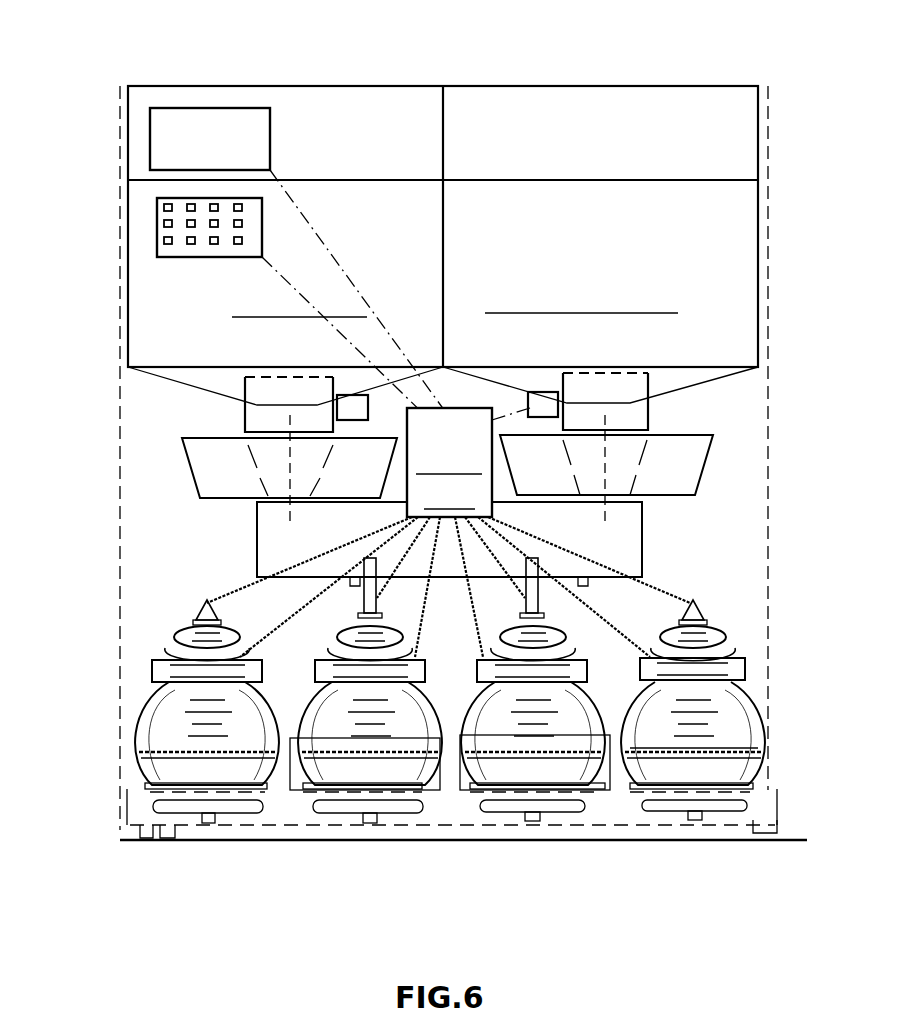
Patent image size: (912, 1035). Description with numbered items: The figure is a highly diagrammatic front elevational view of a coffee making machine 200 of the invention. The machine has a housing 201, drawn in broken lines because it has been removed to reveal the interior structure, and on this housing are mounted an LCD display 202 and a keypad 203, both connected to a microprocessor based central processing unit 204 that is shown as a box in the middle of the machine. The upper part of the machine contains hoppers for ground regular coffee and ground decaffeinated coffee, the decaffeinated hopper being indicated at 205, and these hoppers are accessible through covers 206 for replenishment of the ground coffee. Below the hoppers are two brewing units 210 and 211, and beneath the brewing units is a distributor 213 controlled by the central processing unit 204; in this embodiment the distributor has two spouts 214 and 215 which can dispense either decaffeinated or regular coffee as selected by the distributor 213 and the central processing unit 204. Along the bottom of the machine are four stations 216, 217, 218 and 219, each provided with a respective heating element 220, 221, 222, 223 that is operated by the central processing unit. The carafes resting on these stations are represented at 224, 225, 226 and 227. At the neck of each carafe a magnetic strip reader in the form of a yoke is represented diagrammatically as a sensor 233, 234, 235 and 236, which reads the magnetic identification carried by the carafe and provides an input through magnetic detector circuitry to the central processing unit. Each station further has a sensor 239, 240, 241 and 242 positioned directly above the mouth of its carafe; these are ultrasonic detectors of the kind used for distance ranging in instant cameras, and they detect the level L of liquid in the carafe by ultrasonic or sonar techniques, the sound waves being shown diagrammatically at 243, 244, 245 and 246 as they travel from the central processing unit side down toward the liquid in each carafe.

The coffee making machine 200 is at (760, 148).
The housing 201 is at (768, 222).
The LCD display 202 is at (155, 152).
The keypad 203 is at (158, 258).
The central processing unit 204 is at (148, 340).
The hopper 205 is at (737, 293).
The covers 206 is at (498, 107).
The brewing unit 210 is at (172, 452).
The brewing unit 211 is at (715, 467).
The distributor 213 is at (642, 535).
The spout 214 is at (355, 585).
The spout 215 is at (582, 585).
The station 216 is at (125, 787).
The station 217 is at (413, 790).
The station 218 is at (575, 788).
The station 219 is at (755, 773).
The heating element 220 is at (175, 808).
The heating element 221 is at (335, 805).
The heating element 222 is at (512, 804).
The heating element 223 is at (672, 804).
The carafe 224 is at (148, 712).
The carafe 225 is at (308, 713).
The carafe 226 is at (472, 718).
The carafe 227 is at (632, 718).
The sensor 233 is at (152, 670).
The sensor 234 is at (447, 653).
The sensor 235 is at (587, 670).
The sensor 236 is at (745, 668).
The ultrasonic sensor 239 is at (195, 620).
The ultrasonic sensor 240 is at (357, 615).
The ultrasonic sensor 241 is at (541, 612).
The ultrasonic sensor 242 is at (700, 602).
The sound wave 243 is at (210, 725).
The sound wave 244 is at (370, 707).
The sound wave 245 is at (575, 735).
The sound wave 246 is at (700, 720).
The liquid level L is at (743, 743).